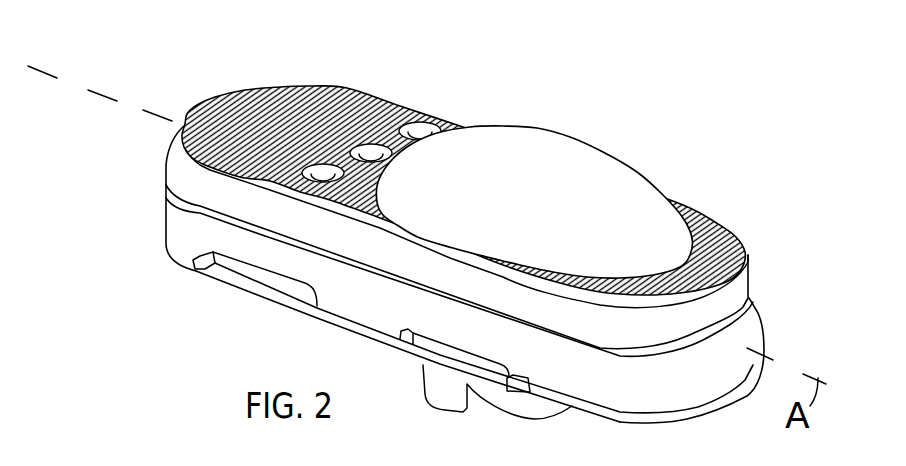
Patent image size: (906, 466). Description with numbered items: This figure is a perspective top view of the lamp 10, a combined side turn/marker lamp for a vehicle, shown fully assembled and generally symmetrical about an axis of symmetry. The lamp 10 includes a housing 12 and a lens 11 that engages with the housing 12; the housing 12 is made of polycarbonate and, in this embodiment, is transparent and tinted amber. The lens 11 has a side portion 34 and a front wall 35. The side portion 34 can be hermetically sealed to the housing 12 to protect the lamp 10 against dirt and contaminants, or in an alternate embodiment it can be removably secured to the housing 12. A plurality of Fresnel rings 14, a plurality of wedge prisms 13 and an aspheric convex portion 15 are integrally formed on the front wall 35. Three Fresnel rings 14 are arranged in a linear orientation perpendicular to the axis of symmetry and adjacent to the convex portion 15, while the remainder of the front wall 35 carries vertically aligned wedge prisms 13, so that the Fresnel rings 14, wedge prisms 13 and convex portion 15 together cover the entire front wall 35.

The lamp 10 is at (745, 231).
The lens 11 is at (185, 125).
The housing 12 is at (233, 287).
The wedge prisms 13 is at (185, 125).
The Fresnel rings 14 is at (420, 134).
The aspheric convex portion 15 is at (582, 140).
The side portion 34 is at (720, 303).
The front wall 35 is at (353, 103).